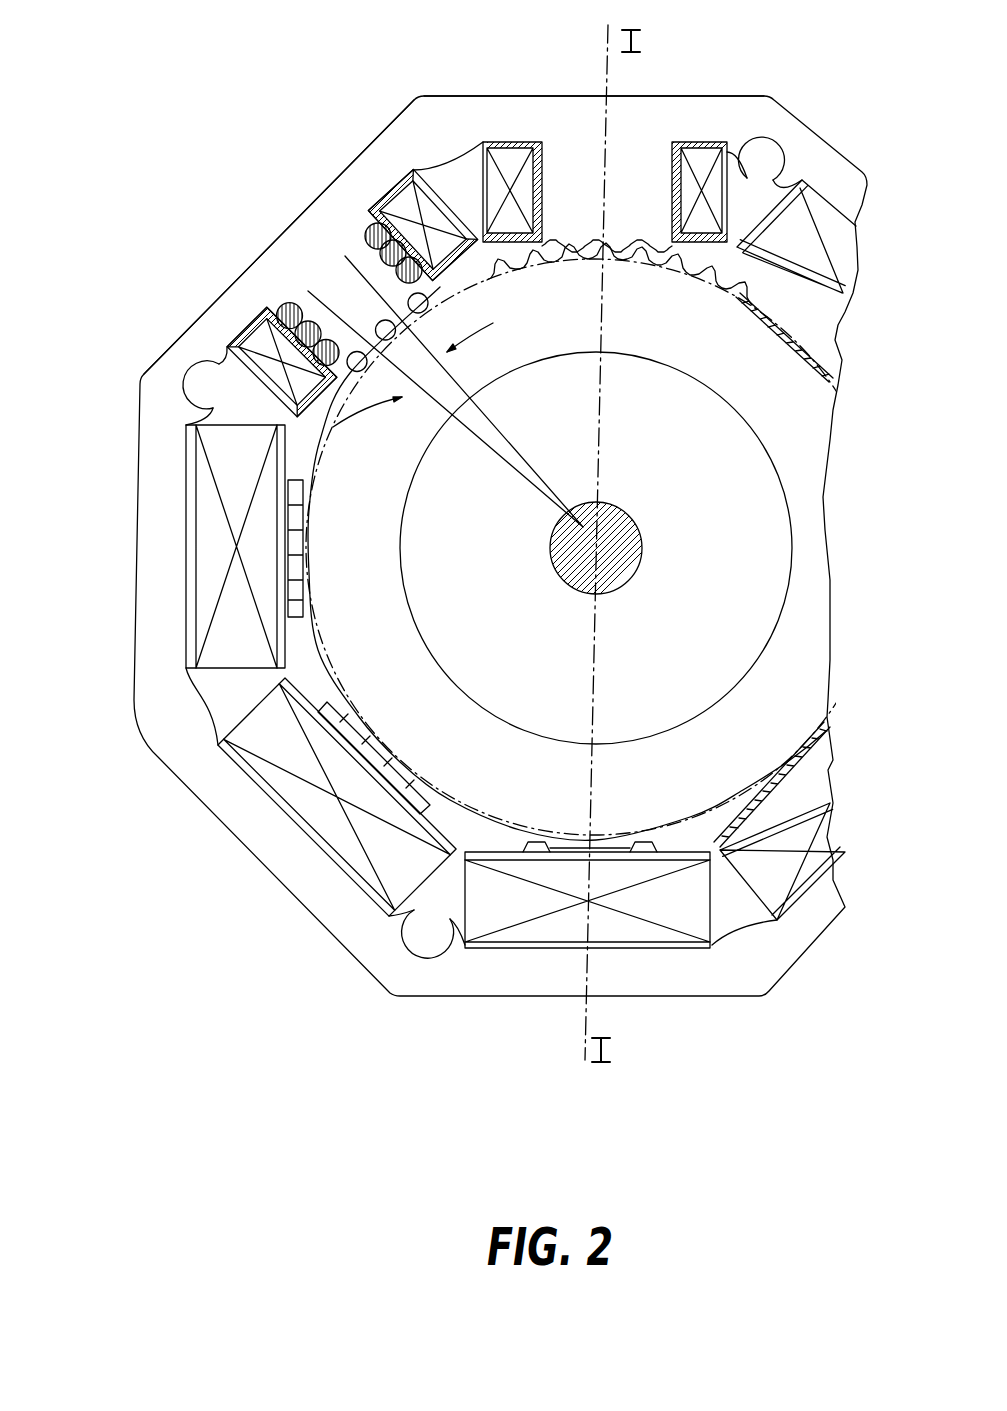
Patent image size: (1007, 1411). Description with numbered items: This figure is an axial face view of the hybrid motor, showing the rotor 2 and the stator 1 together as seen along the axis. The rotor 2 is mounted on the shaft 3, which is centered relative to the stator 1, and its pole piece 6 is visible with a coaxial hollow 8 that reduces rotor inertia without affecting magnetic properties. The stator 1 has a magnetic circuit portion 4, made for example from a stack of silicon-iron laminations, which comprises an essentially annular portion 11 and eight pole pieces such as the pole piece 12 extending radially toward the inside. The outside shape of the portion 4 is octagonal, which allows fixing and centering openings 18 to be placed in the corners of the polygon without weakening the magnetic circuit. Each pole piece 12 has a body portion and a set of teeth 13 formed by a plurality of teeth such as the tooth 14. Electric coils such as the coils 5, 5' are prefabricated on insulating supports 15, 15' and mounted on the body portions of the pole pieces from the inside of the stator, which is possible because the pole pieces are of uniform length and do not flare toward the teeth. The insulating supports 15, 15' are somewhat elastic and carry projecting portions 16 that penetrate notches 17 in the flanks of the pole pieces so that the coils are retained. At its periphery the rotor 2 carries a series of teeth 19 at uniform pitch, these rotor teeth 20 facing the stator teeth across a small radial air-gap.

The stator 1 is at (118, 575).
The rotor 2 is at (798, 665).
The shaft 3 is at (643, 543).
The magnetic circuit portion 4 is at (735, 86).
The electric coil 5 is at (496, 137).
The electric coil 5' is at (248, 323).
The pole piece 6 is at (495, 747).
The coaxial hollow 8 is at (403, 547).
The annular portion 11 is at (430, 117).
The pole piece 12 is at (318, 265).
The set of teeth 13 is at (636, 225).
The tooth 14 is at (475, 298).
The insulating support 15 is at (515, 137).
The insulating support 15' is at (390, 196).
The projecting portion 16 is at (240, 323).
The notch 17 is at (287, 307).
The fixing and centering opening 18 is at (183, 388).
The tooth 19 is at (637, 258).
The teeth 20 is at (725, 303).